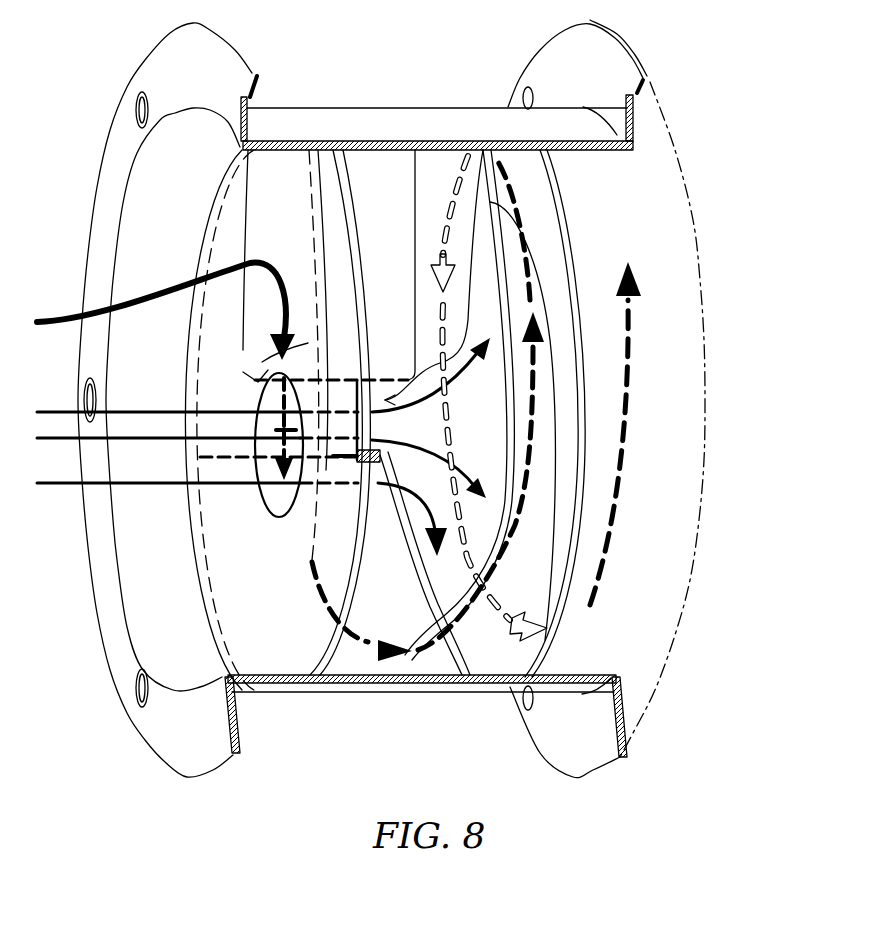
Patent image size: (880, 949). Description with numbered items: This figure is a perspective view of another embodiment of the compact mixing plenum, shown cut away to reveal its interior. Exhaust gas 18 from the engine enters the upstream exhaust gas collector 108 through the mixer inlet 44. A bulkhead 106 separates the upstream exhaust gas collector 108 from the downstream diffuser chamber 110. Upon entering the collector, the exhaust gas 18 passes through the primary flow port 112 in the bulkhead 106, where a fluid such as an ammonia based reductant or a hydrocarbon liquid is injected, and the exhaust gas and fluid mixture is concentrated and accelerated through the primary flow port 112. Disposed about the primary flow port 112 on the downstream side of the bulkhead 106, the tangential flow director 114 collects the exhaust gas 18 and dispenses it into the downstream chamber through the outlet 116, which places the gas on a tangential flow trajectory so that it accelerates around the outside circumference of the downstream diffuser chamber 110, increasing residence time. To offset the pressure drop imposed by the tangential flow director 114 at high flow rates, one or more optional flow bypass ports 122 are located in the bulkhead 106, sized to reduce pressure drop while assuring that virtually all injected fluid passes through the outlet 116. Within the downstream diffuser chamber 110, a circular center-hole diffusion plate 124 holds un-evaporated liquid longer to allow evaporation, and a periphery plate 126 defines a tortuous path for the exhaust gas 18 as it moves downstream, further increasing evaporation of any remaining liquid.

The exhaust gas 18 is at (67, 302).
The mixer inlet 44 is at (158, 628).
The bulkhead 106 is at (203, 558).
The upstream exhaust gas collector 108 is at (275, 606).
The downstream diffuser chamber 110 is at (402, 604).
The primary flow port 112 is at (262, 234).
The tangential flow director 114 is at (385, 205).
The outlet 116 is at (414, 150).
The flow bypass port 122 is at (265, 468).
The center-hole diffusion plate 124 is at (575, 612).
The periphery plate 126 is at (413, 450).